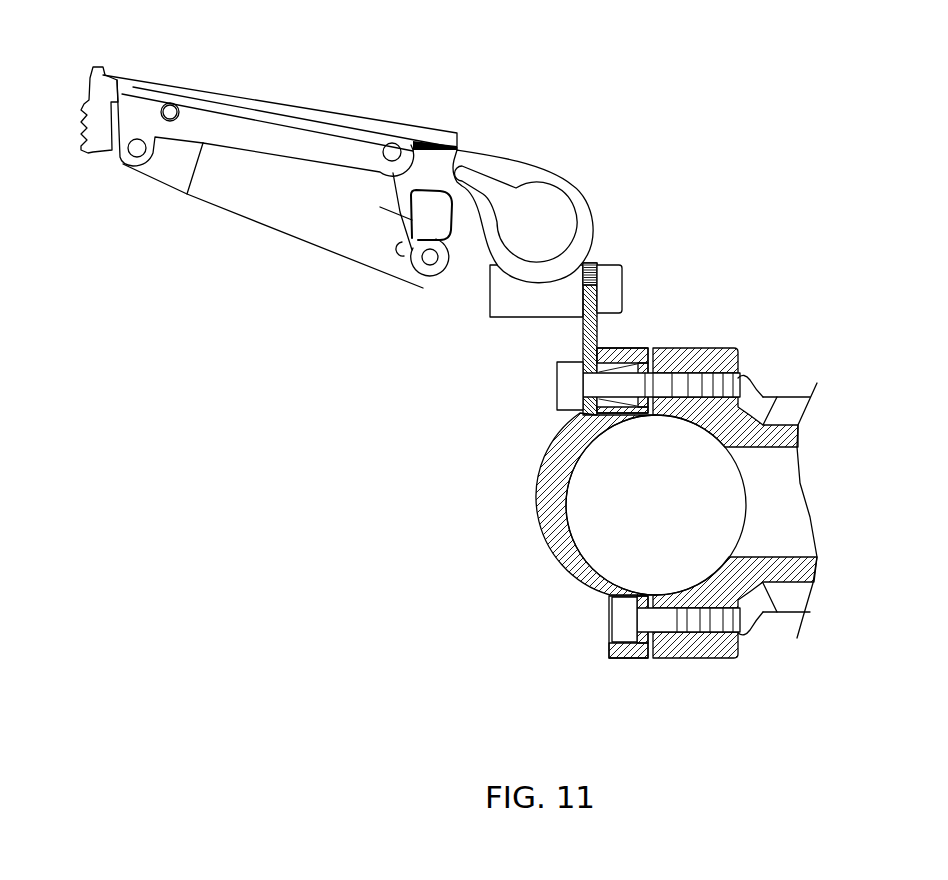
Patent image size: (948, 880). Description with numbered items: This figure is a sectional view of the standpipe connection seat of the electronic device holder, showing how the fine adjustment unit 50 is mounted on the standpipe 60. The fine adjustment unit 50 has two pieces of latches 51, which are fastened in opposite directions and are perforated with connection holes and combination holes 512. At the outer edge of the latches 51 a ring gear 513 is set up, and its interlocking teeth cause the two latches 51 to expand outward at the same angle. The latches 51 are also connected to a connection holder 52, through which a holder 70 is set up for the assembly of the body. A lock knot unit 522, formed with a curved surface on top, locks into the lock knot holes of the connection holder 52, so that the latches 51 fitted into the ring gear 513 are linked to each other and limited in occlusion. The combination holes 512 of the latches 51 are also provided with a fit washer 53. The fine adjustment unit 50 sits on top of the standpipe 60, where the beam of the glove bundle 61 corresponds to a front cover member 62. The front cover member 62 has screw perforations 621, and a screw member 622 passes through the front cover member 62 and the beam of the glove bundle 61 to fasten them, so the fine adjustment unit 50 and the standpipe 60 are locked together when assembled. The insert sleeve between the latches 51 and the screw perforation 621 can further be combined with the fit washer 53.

The fine adjustment unit 50 is at (545, 270).
The latch 51 is at (531, 270).
The combination hole 512 is at (592, 384).
The ring gear 513 is at (588, 263).
The connection holder 52 is at (500, 303).
The lock knot unit 522 is at (610, 278).
The fit washer 53 is at (557, 435).
The standpipe 60 is at (819, 450).
The beam of the glove bundle 61 is at (717, 410).
The front cover member 62 is at (573, 503).
The screw perforation 621 is at (628, 627).
The screw member 622 is at (676, 619).
The holder 70 is at (235, 235).